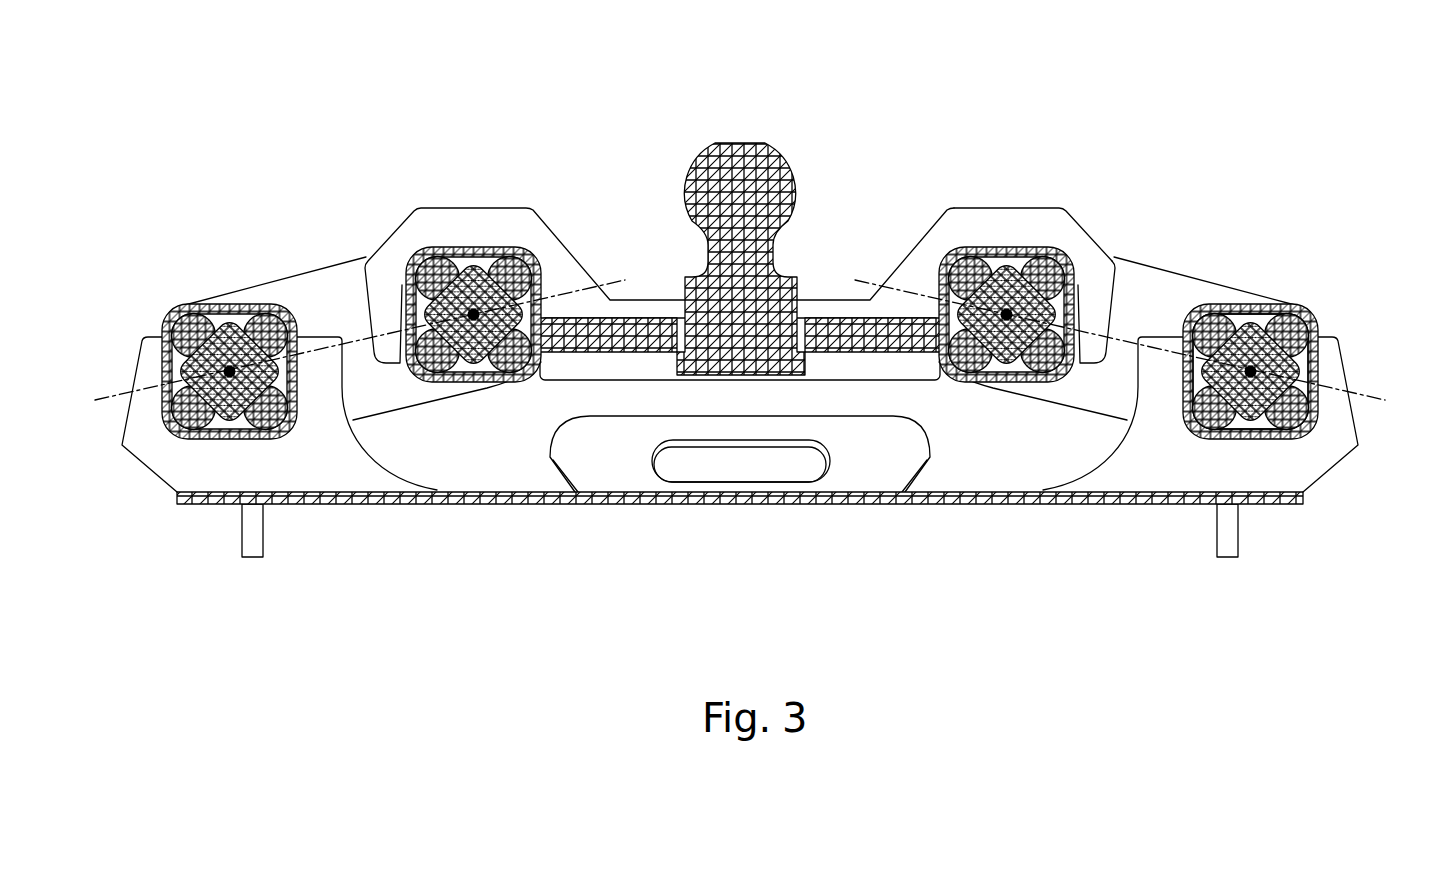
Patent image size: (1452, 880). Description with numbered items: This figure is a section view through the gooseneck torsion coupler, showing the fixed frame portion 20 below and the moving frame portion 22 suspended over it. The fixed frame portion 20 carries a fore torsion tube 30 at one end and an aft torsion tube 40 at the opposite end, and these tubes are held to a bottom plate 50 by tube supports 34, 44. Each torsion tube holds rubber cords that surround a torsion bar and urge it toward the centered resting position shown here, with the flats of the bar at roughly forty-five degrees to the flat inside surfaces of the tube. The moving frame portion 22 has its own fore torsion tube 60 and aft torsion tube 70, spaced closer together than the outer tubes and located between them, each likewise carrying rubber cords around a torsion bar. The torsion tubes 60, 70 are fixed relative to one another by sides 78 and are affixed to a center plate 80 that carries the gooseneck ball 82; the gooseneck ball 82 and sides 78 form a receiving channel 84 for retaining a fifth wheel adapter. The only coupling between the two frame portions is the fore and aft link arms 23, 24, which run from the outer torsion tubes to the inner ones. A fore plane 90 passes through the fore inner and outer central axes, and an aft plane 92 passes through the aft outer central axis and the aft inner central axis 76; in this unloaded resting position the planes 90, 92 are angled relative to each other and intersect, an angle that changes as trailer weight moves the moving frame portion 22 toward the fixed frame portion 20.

The fixed frame portion 20 is at (750, 340).
The moving frame portion 22 is at (712, 393).
The fore link arm 23 is at (320, 283).
The aft link arm 24 is at (1160, 282).
The fore torsion tube 30 is at (182, 317).
The tube support 34 is at (167, 460).
The aft torsion tube 40 is at (1299, 315).
The tube support 44 is at (1320, 452).
The bottom plate 50 is at (625, 505).
The fore torsion tube 60 is at (496, 260).
The aft torsion tube 70 is at (1028, 258).
The aft inner central axis 76 is at (937, 264).
The sides 78 is at (955, 232).
The center plate 80 is at (828, 330).
The gooseneck ball 82 is at (740, 143).
The receiving channel 84 is at (634, 186).
The fore plane 90 is at (97, 405).
The aft plane 92 is at (1383, 405).